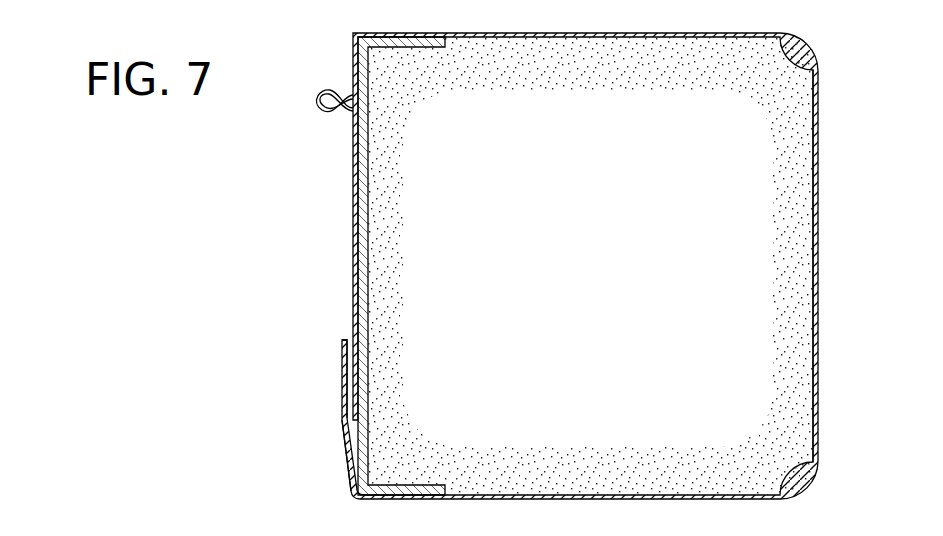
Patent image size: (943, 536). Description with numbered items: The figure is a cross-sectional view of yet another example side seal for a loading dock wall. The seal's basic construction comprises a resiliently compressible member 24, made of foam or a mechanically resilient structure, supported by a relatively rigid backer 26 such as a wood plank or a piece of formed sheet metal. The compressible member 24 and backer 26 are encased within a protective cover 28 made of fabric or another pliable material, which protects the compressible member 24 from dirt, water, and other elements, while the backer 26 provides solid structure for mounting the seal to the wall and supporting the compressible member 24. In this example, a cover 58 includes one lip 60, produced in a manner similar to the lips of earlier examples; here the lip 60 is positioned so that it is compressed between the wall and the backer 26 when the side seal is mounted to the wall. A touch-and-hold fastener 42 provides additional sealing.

The resiliently compressible member 24 is at (724, 217).
The backer 26 is at (370, 193).
The protective cover 28 is at (354, 237).
The touch-and-hold fastener 42 is at (346, 339).
The cover 58 is at (814, 309).
The lip 60 is at (318, 105).